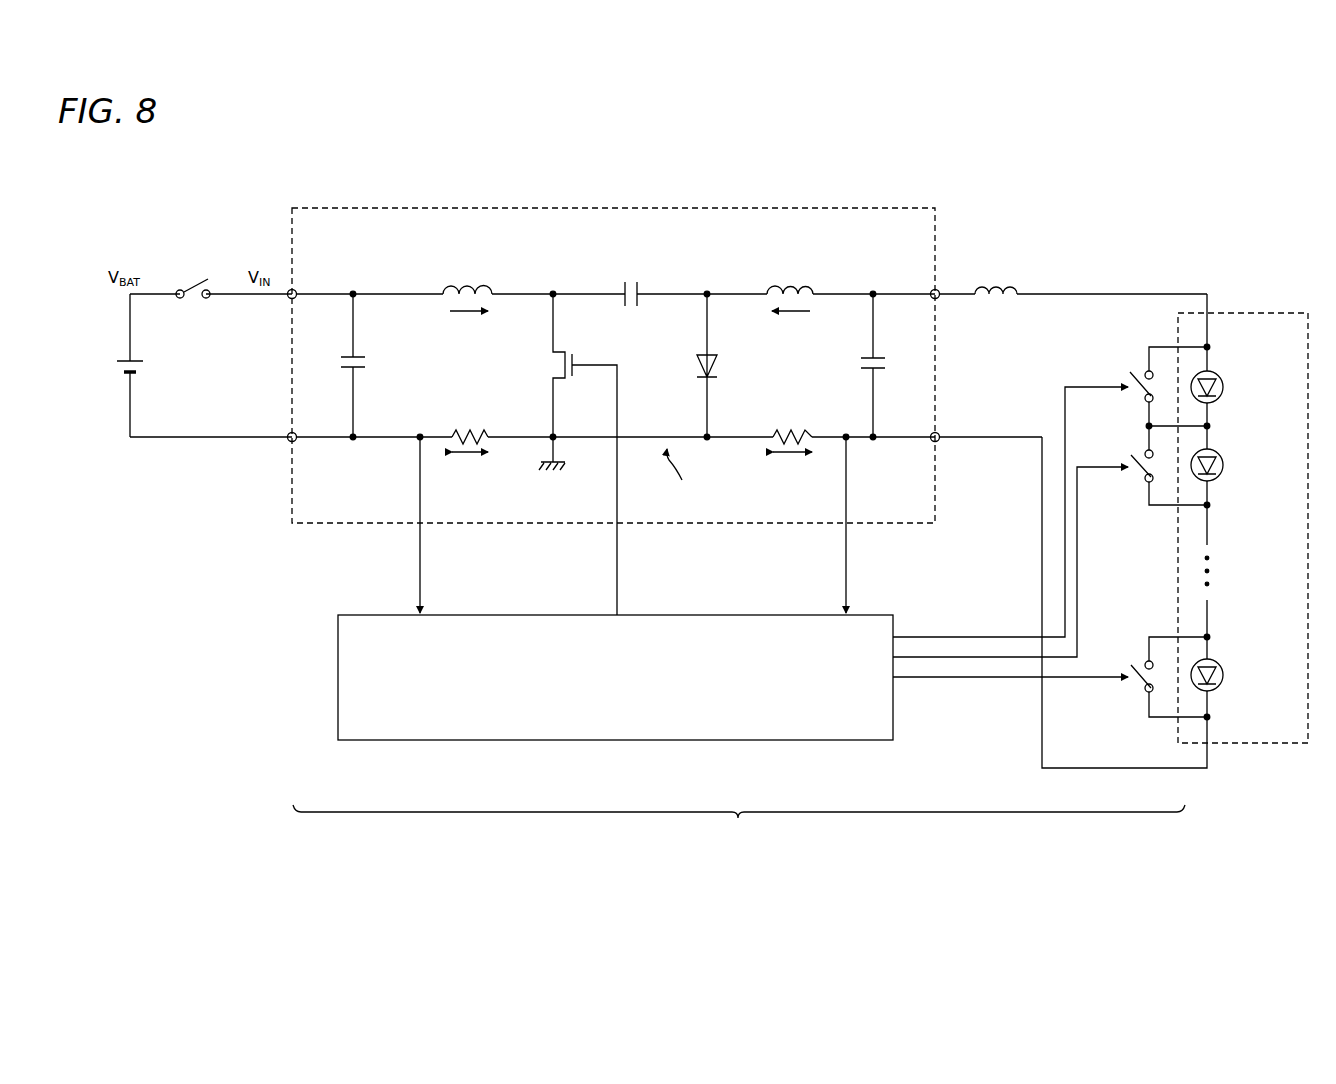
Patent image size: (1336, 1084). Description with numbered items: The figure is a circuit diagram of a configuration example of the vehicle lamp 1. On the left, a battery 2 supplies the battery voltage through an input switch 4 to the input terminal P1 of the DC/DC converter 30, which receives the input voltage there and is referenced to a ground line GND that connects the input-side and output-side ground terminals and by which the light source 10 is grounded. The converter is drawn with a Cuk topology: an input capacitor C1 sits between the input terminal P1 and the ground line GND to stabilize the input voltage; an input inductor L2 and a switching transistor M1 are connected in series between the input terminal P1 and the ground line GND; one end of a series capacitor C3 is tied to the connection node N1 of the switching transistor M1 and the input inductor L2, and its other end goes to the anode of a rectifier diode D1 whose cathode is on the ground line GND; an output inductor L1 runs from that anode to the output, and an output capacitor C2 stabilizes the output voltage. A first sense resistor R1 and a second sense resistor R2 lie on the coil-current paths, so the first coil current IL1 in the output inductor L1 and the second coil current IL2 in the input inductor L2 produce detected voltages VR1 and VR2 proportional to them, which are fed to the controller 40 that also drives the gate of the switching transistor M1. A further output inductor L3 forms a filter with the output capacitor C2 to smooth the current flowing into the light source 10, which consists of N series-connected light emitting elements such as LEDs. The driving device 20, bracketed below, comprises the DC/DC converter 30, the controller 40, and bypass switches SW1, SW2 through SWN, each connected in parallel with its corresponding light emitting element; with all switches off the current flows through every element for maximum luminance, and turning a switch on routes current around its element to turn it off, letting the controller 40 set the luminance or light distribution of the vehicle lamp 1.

The vehicle lamp 1 is at (1154, 187).
The battery 2 is at (119, 368).
The input switch 4 is at (188, 284).
The light source 10 is at (1282, 312).
The driving device 20 is at (739, 827).
The DC/DC converter 30 is at (760, 208).
The controller 40 is at (338, 696).
The input capacitor C1 is at (379, 365).
The output capacitor C2 is at (888, 366).
The series capacitor C3 is at (630, 279).
The output inductor L1 is at (790, 288).
The input inductor L2 is at (468, 288).
The output inductor L3 is at (995, 288).
The first sense resistor R1 is at (792, 430).
The second sense resistor R2 is at (470, 430).
The rectifier diode D1 is at (728, 365).
The switching transistor M1 is at (561, 454).
The connection node N1 is at (555, 288).
The input terminal P1 is at (286, 304).
The bypass switch SW1 is at (1130, 372).
The bypass switch SW2 is at (1130, 452).
The bypass switch SWN is at (1132, 662).
The ground line GND is at (680, 477).
The first coil current IL1 is at (791, 325).
The second coil current IL2 is at (469, 325).
The first detected voltage VR1 is at (792, 467).
The second detected voltage VR2 is at (470, 467).